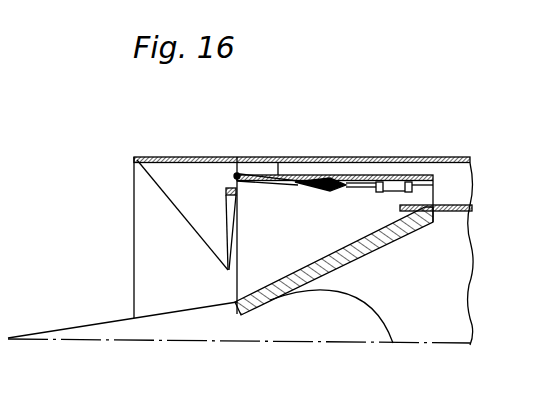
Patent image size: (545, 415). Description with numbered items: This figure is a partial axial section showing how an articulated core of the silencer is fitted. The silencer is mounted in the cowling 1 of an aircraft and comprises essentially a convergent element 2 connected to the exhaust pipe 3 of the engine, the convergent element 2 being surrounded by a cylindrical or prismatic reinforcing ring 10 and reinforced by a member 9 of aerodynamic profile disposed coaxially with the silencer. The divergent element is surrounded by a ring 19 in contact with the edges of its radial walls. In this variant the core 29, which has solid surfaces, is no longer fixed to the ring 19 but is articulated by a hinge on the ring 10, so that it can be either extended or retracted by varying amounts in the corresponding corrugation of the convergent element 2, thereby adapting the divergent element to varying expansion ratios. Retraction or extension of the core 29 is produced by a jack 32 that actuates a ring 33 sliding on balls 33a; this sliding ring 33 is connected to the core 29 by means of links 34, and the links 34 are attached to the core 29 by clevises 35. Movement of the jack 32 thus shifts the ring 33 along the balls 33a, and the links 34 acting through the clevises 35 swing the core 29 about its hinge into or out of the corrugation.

The cowling 1 is at (322, 159).
The convergent element 2 is at (334, 261).
The exhaust pipe 3 is at (452, 210).
The member of aerodynamic profile 9 is at (337, 320).
The reinforcing ring 10 is at (422, 176).
The ring 19 is at (200, 156).
The core 29 is at (172, 180).
The jack 32 is at (393, 185).
The ring 33 is at (330, 183).
The balls 33a is at (331, 178).
The links 34 is at (272, 197).
The clevises 35 is at (226, 192).